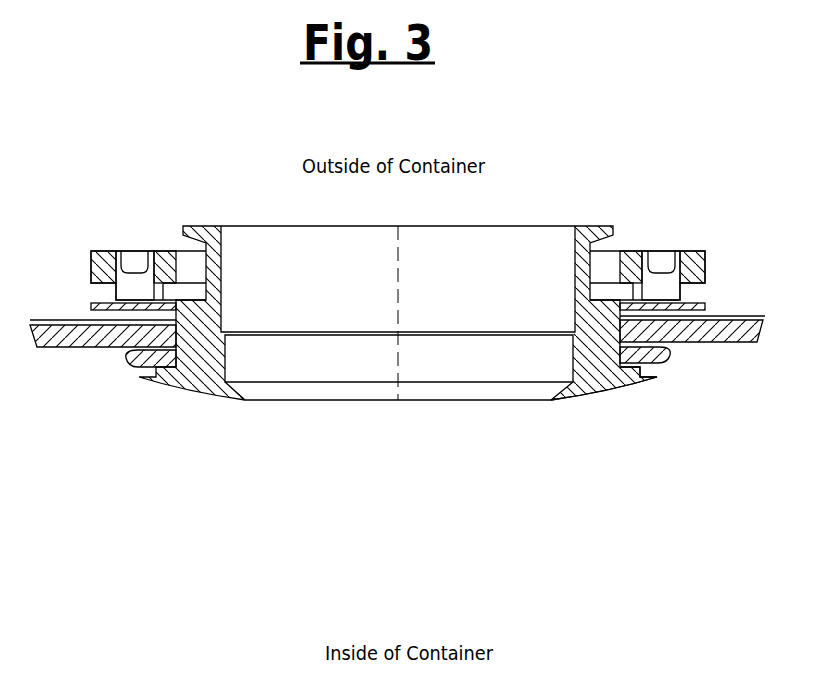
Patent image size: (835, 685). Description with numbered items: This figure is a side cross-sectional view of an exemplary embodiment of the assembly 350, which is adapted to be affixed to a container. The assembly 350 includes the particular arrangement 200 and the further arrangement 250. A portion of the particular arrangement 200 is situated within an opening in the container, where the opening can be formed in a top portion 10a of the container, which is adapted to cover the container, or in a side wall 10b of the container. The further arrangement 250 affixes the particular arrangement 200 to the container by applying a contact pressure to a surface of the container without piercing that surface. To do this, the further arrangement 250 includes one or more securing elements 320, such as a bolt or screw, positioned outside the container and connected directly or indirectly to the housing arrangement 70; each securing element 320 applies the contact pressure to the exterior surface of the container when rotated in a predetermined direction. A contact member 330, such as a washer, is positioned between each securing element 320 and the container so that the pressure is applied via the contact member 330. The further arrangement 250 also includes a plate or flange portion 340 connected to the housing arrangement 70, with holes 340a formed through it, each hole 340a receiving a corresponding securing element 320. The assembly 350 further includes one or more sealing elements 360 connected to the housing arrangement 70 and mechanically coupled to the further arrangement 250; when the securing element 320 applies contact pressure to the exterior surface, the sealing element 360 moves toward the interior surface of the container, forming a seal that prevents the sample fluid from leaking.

The assembly 350 is at (128, 65).
The particular arrangement 200 is at (398, 331).
The housing arrangement 70 is at (575, 352).
The sealing element 360 is at (607, 390).
The hole 340a is at (590, 280).
The plate or flange portion 340 is at (705, 255).
The securing element 320 is at (667, 300).
The contact member 330 is at (668, 300).
The further arrangement 250 is at (432, 298).
The top portion of the container 10a is at (738, 342).
The side wall of the container 10b is at (103, 333).